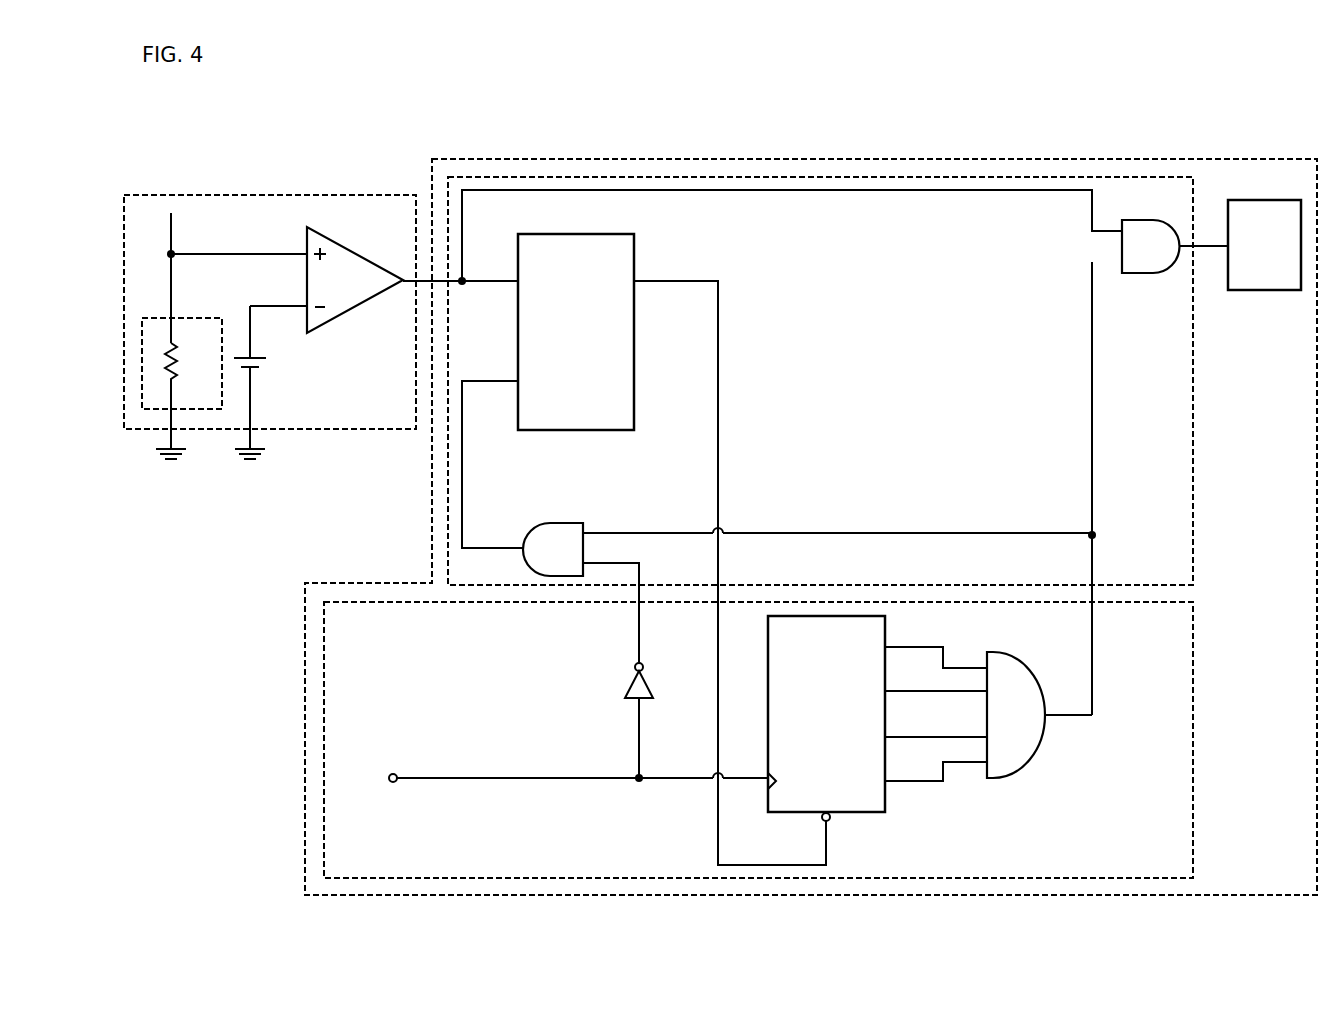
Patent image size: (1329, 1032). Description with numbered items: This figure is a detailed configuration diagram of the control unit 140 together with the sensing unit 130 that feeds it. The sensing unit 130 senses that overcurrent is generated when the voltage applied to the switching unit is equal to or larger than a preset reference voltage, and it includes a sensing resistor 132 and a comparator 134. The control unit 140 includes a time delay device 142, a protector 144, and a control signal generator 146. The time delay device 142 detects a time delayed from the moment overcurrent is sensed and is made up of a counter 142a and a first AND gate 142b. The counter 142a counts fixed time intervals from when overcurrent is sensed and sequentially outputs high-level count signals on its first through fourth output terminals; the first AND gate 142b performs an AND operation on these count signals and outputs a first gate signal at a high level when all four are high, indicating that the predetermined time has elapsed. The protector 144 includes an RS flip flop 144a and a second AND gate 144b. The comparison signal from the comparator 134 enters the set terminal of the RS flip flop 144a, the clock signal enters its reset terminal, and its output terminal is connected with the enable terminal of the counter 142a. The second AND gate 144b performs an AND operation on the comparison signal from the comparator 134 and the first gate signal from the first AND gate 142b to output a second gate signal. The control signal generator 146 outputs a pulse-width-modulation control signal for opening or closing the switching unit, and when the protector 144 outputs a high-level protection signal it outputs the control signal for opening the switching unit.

The sensing unit 130 is at (270, 194).
The sensing resistor 132 is at (198, 318).
The comparator 134 is at (357, 311).
The control unit 140 is at (858, 158).
The time delay device 142 is at (1194, 752).
The counter 142a is at (888, 800).
The first AND gate 142b is at (1035, 752).
The protector 144 is at (1194, 441).
The RS flip flop 144a is at (636, 245).
The second AND gate 144b is at (1142, 275).
The control signal generator 146 is at (1262, 292).